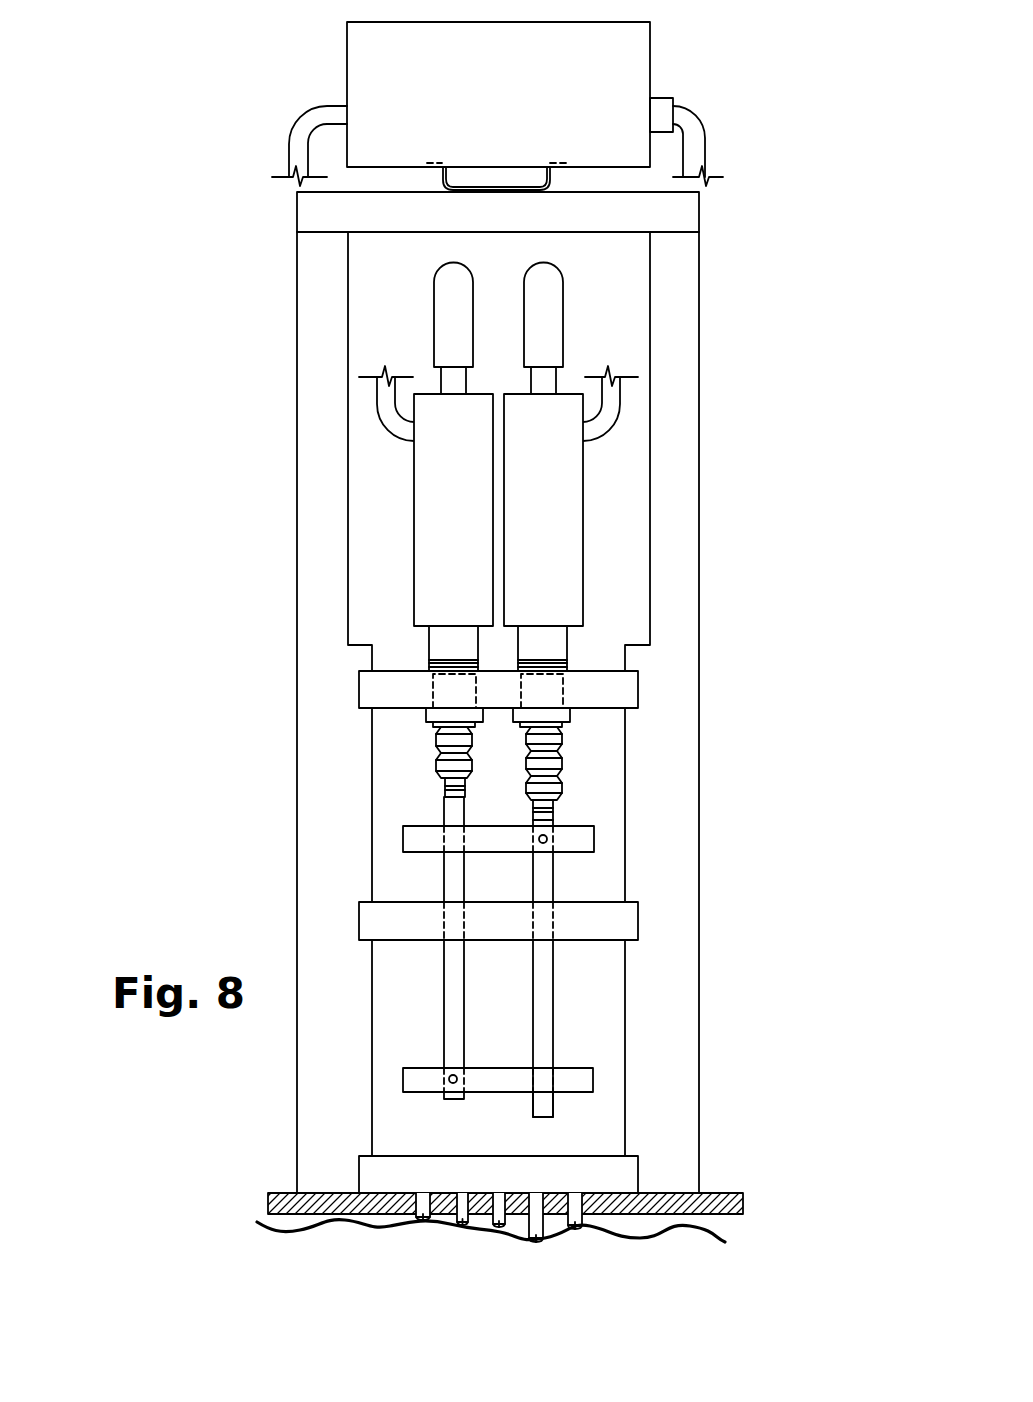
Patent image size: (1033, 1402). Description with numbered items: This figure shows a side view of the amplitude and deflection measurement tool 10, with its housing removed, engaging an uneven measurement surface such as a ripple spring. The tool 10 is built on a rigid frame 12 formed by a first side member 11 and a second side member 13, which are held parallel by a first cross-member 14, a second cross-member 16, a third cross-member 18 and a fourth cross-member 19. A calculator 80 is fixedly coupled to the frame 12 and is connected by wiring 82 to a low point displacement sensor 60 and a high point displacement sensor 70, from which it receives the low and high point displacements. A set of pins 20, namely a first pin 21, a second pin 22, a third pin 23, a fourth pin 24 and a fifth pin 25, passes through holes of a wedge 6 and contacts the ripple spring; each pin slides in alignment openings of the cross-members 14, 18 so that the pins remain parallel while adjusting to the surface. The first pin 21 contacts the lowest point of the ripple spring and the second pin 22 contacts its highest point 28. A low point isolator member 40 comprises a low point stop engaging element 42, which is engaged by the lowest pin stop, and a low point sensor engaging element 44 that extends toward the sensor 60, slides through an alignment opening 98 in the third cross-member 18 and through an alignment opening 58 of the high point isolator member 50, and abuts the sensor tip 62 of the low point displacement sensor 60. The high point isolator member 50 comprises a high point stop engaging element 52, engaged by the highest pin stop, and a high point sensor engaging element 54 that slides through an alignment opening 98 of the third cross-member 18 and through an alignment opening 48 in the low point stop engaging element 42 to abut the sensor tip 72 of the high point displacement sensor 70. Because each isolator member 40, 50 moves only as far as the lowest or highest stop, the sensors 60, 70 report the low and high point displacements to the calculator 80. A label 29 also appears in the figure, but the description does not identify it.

The amplitude and deflection measurement tool 10 is at (257, 82).
The calculator 80 is at (467, 92).
The wiring 82 is at (697, 142).
The fourth cross-member 19 is at (511, 225).
The frame 12 is at (484, 692).
The first side member 11 is at (315, 632).
The second side member 13 is at (678, 567).
The first cross-member 14 is at (486, 1185).
The second cross-member 16 is at (407, 699).
The third cross-member 18 is at (421, 933).
The low point displacement sensor 60 is at (433, 540).
The high point displacement sensor 70 is at (560, 520).
The low point sensor tip 62 is at (447, 785).
The high point sensor tip 72 is at (545, 812).
The low point isolator member 40 is at (457, 940).
The low point sensor engaging element 44 is at (453, 993).
The low point stop engaging element 42 is at (417, 1075).
The high point isolator member 50 is at (535, 923).
The high point sensor engaging element 54 is at (543, 1012).
The alignment opening 58 is at (453, 840).
The high point stop engaging element 52 is at (582, 838).
The alignment openings 98 is at (545, 920).
The alignment opening 48 is at (545, 1082).
The set of pins 20 is at (623, 1202).
The first tool group 29 is at (412, 1251).
The second pin 22 is at (422, 1222).
The third pin 23 is at (462, 1226).
The fourth pin 24 is at (500, 1228).
The highest point 28 is at (606, 1259).
The first pin 21 is at (535, 1240).
The fifth pin 25 is at (582, 1222).
The wedge 6 is at (287, 1202).